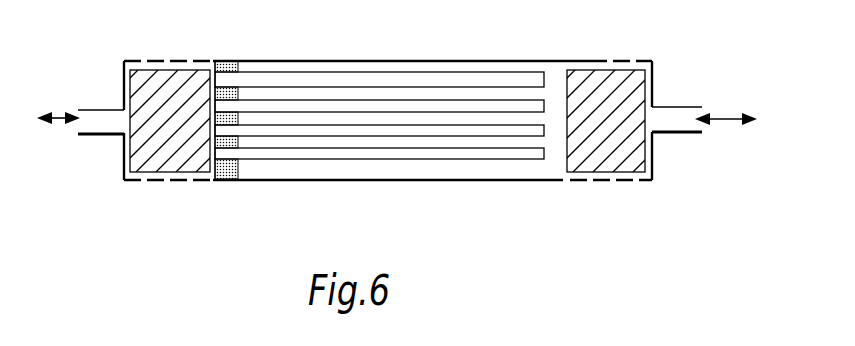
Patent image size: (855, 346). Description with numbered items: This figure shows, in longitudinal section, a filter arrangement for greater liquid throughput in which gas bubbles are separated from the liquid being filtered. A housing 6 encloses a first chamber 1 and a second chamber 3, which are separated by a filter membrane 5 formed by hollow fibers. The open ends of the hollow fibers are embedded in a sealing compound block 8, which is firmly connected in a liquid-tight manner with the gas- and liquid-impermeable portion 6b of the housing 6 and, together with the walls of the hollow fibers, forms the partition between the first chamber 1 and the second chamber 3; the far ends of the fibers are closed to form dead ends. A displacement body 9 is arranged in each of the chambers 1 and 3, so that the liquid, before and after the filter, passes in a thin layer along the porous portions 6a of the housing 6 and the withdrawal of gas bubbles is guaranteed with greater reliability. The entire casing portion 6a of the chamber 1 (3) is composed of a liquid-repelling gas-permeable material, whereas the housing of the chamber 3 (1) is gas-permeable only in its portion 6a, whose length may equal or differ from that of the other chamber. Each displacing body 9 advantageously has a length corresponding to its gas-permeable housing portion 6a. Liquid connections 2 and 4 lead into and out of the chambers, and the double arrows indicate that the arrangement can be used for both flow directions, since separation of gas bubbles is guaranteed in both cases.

The first chamber 1 is at (163, 61).
The second chamber 3 is at (395, 65).
The first lead (alternatively 4) 2 is at (101, 117).
The second lead (alternatively 2) 4 is at (653, 124).
The filter membrane 5 is at (447, 79).
The housing 6 is at (388, 114).
The gas-permeable housing portion 6a is at (194, 182).
The gas- and liquid-impermeable housing portion 6b is at (332, 25).
The sealing compound block 8 is at (240, 166).
The displacement body 9 is at (193, 78).